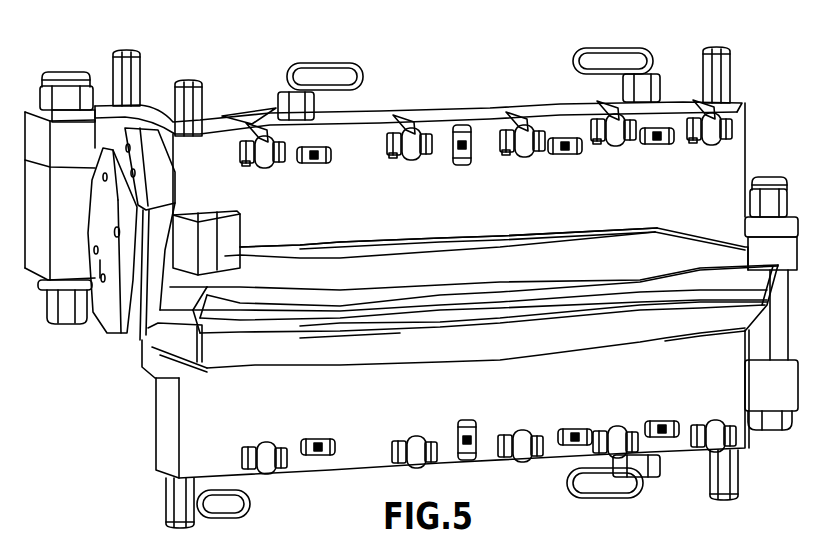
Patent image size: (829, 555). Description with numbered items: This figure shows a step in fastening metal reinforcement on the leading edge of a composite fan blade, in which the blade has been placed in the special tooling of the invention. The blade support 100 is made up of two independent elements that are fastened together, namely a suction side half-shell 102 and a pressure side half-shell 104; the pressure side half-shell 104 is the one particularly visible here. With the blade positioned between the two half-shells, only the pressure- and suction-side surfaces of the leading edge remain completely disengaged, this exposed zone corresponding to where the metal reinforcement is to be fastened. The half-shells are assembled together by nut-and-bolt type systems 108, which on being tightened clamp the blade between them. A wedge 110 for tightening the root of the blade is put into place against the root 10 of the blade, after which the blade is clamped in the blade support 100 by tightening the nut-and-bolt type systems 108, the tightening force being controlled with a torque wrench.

The root 10 is at (140, 338).
The blade support 100 is at (387, 287).
The suction side half-shell 102 is at (513, 373).
The pressure side half-shell 104 is at (512, 190).
The nut-and-bolt type systems 108 is at (71, 72).
The wedge 110 is at (104, 230).